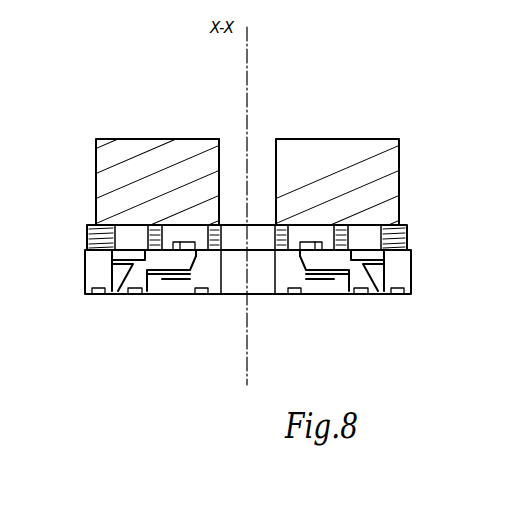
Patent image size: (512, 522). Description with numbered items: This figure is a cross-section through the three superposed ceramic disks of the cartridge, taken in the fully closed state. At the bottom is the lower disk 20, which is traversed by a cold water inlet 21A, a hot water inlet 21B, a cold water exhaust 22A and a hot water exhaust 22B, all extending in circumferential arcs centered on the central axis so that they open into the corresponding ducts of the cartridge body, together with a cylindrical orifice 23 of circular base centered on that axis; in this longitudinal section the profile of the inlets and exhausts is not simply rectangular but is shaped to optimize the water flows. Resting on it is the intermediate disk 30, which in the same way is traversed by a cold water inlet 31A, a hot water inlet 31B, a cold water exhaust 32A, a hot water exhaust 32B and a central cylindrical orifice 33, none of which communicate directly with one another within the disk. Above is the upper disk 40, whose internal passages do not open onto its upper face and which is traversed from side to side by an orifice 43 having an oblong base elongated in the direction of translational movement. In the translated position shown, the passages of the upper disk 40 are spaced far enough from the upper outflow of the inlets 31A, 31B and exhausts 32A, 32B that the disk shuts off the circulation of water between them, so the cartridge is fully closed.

The lower disk 20 is at (414, 284).
The cold water inlet 21A is at (124, 266).
The hot water inlet 21B is at (372, 266).
The cold water exhaust 22A is at (158, 272).
The hot water exhaust 22B is at (338, 272).
The cylindrical orifice 23 is at (224, 257).
The intermediate disk 30 is at (405, 233).
The cold water inlet 31A is at (117, 240).
The hot water inlet 31B is at (408, 246).
The cold water exhaust 32A is at (207, 238).
The hot water exhaust 32B is at (288, 238).
The cylindrical orifice 33 is at (272, 238).
The upper disk 40 is at (395, 168).
The orifice 43 is at (263, 140).